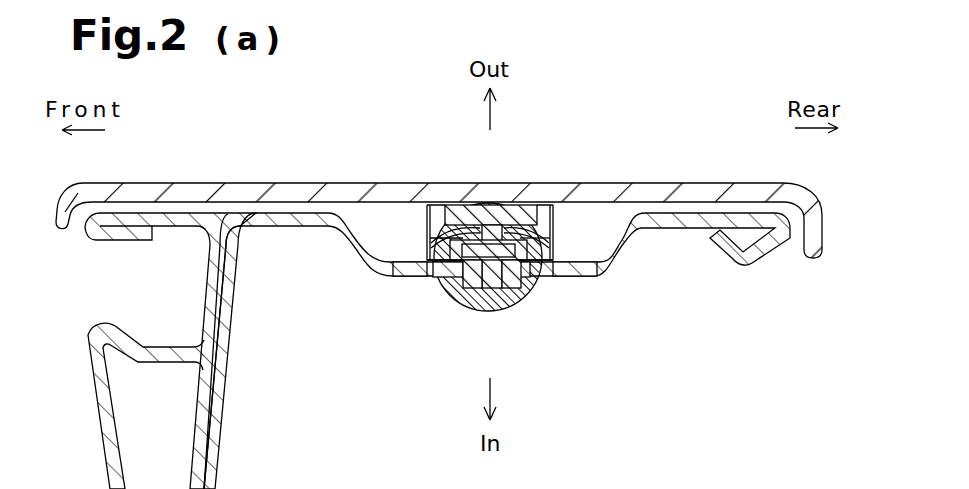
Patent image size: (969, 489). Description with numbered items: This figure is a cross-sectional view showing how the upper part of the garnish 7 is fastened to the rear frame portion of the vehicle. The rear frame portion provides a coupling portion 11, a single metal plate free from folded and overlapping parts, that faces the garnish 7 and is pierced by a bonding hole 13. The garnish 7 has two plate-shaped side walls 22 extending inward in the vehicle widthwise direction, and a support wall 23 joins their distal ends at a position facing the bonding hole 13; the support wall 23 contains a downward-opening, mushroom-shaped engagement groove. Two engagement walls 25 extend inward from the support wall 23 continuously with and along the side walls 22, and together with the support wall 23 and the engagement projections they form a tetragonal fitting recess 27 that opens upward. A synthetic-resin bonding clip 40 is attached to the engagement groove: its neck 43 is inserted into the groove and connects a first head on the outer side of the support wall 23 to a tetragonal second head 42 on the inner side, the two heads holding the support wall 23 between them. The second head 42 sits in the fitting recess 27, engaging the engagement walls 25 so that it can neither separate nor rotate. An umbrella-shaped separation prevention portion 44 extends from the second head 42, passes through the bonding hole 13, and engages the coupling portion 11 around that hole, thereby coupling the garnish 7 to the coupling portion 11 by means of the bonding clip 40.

The garnish 7 is at (766, 182).
The coupling portion 11 is at (599, 276).
The bonding hole 13 is at (466, 296).
The side walls 22 is at (427, 214).
The support wall 23 is at (506, 205).
The engagement walls 25 is at (440, 270).
The fitting recess 27 is at (526, 292).
The bonding clip 40 is at (493, 251).
The second head 42 is at (538, 244).
The neck 43 is at (448, 243).
The separation prevention portion 44 is at (490, 312).